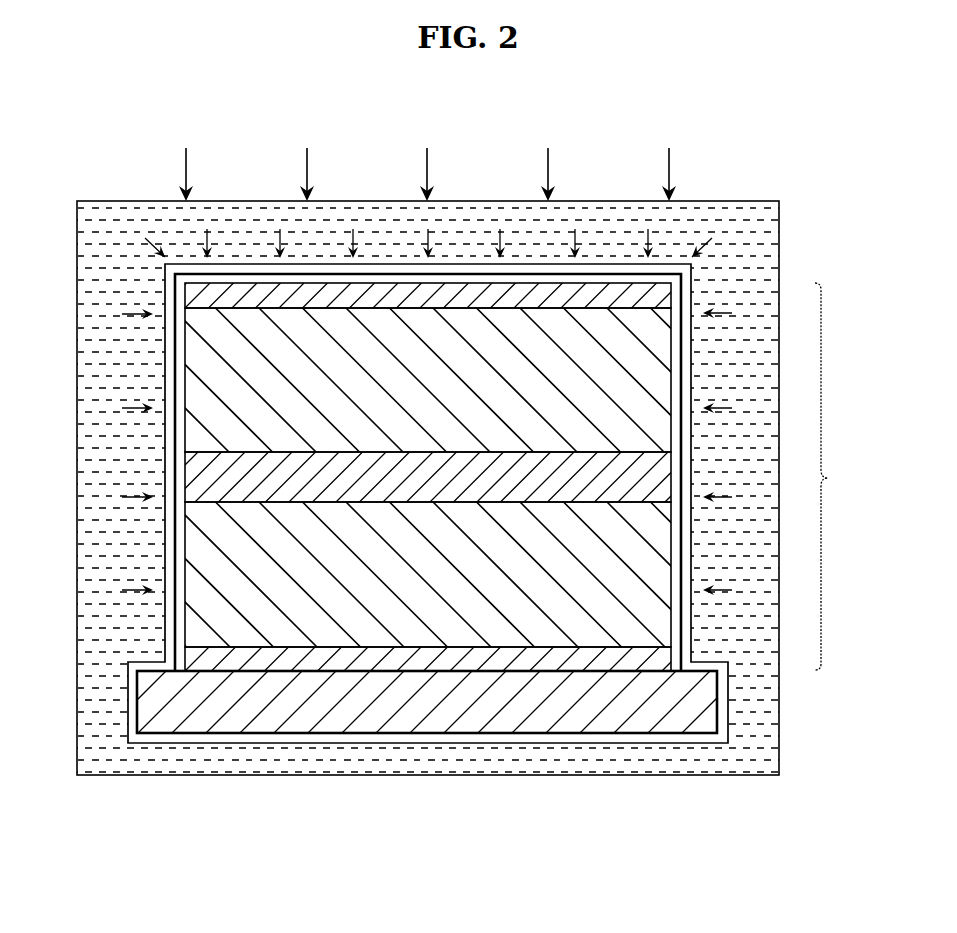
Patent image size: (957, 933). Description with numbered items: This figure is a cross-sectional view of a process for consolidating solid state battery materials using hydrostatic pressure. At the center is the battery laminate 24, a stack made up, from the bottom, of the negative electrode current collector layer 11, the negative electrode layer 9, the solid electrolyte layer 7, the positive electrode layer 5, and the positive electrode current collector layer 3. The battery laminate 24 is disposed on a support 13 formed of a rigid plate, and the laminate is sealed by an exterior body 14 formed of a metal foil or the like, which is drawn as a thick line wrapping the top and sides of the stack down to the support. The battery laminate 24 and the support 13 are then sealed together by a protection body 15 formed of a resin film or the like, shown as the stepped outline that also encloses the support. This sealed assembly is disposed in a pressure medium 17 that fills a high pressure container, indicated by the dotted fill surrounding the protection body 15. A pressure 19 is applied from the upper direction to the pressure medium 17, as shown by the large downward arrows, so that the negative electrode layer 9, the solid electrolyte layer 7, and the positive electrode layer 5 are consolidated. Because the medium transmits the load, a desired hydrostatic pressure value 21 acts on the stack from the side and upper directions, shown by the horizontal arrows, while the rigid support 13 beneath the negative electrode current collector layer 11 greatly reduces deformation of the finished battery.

The positive electrode current collector layer 3 is at (655, 297).
The positive electrode layer 5 is at (655, 378).
The solid electrolyte layer 7 is at (655, 467).
The negative electrode layer 9 is at (655, 533).
The negative electrode current collector layer 11 is at (650, 658).
The support 13 is at (690, 710).
The exterior body 14 is at (381, 277).
The protection body 15 is at (330, 264).
The pressure medium 17 is at (243, 228).
The pressure 19 is at (549, 178).
The hydrostatic pressure value 21 is at (131, 308).
The battery laminate 24 is at (839, 476).